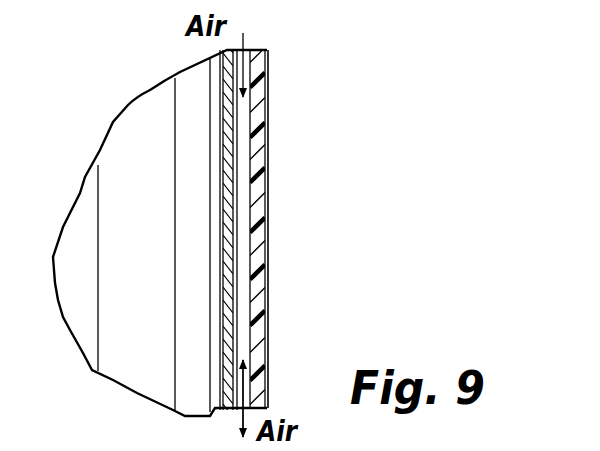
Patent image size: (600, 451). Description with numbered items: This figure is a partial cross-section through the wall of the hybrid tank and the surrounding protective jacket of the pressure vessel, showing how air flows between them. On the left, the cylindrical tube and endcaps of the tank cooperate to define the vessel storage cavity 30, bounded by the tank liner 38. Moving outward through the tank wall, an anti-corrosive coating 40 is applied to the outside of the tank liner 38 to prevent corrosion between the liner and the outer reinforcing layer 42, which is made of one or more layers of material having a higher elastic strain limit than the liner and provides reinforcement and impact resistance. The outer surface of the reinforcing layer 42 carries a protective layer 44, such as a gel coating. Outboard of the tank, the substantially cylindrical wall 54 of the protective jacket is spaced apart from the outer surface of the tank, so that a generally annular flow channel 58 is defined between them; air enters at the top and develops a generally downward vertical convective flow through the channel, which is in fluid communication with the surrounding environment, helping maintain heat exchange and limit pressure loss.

The vessel storage cavity 30 is at (92, 218).
The tank liner 38 is at (127, 151).
The anti-corrosive coating 40 is at (190, 414).
The outer reinforcing layer 42 is at (235, 410).
The protective layer 44 is at (252, 44).
The substantially cylindrical wall 54 is at (258, 188).
The annular flow channel 58 is at (240, 242).